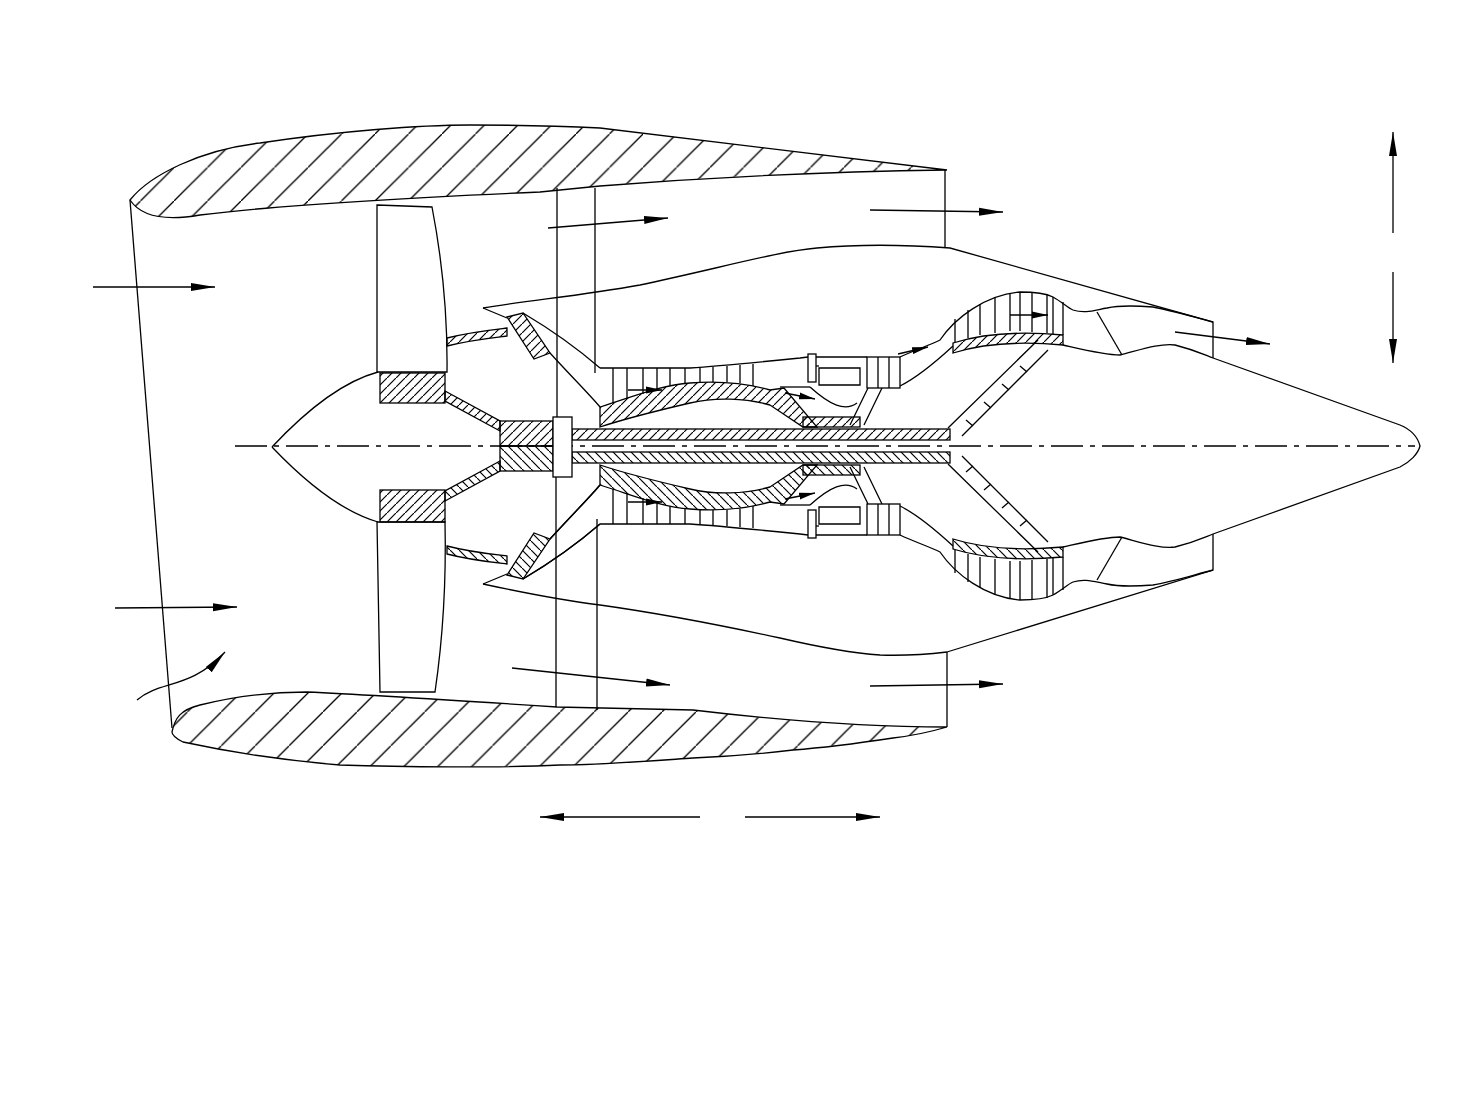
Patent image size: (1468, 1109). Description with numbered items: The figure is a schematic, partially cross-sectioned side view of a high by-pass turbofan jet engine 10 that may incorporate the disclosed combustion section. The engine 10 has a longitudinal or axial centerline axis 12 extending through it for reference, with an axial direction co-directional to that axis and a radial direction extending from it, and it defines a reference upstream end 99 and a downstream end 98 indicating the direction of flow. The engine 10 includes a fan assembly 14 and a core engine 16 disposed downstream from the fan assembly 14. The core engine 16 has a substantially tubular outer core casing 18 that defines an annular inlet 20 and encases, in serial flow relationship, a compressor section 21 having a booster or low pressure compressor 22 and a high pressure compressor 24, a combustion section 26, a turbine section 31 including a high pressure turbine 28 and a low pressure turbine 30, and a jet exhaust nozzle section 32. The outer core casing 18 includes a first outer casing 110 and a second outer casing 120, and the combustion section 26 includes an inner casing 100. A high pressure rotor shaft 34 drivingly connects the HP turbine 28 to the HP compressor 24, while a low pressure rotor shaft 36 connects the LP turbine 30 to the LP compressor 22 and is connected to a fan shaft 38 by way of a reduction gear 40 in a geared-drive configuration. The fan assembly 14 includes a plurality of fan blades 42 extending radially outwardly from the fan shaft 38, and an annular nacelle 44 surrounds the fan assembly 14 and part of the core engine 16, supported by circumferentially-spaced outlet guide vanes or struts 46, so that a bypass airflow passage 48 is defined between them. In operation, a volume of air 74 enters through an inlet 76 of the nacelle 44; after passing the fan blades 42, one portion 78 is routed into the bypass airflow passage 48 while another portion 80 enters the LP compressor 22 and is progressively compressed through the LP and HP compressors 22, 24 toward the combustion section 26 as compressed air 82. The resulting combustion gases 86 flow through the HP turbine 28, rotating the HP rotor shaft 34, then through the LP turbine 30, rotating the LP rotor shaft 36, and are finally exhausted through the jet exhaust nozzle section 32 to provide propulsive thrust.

The high by-pass turbofan jet engine 10 is at (1197, 200).
The longitudinal or axial centerline axis 12 is at (1130, 440).
The fan assembly 14 is at (478, 228).
The core engine 16 is at (817, 242).
The outer core casing 18 is at (795, 640).
The annular inlet 20 is at (488, 583).
The compressor section 21 is at (616, 332).
The low pressure compressor 22 is at (563, 533).
The high pressure compressor 24 is at (633, 520).
The combustion section 26 is at (830, 527).
The high pressure turbine 28 is at (890, 527).
The low pressure turbine 30 is at (1038, 612).
The turbine section 31 is at (883, 320).
The jet exhaust nozzle section 32 is at (1128, 575).
The high pressure rotor shaft 34 is at (884, 394).
The low pressure rotor shaft 36 is at (990, 387).
The fan shaft 38 is at (447, 400).
The reduction gear 40 is at (557, 410).
The fan blades 42 is at (393, 282).
The nacelle 44 is at (390, 130).
The outlet guide vanes or struts 46 is at (585, 205).
The bypass airflow passage 48 is at (746, 231).
The volume of air 74 is at (165, 283).
The inlet 76 is at (166, 695).
The bypass air 78 is at (616, 228).
The flow of air 80 is at (465, 322).
The compressed air 82 is at (623, 368).
The combustion gases 86 is at (885, 352).
The downstream end 98 is at (1425, 456).
The upstream end 99 is at (90, 456).
The inner casing 100 is at (843, 407).
The first outer casing 110 is at (772, 358).
The second outer casing 120 is at (827, 352).